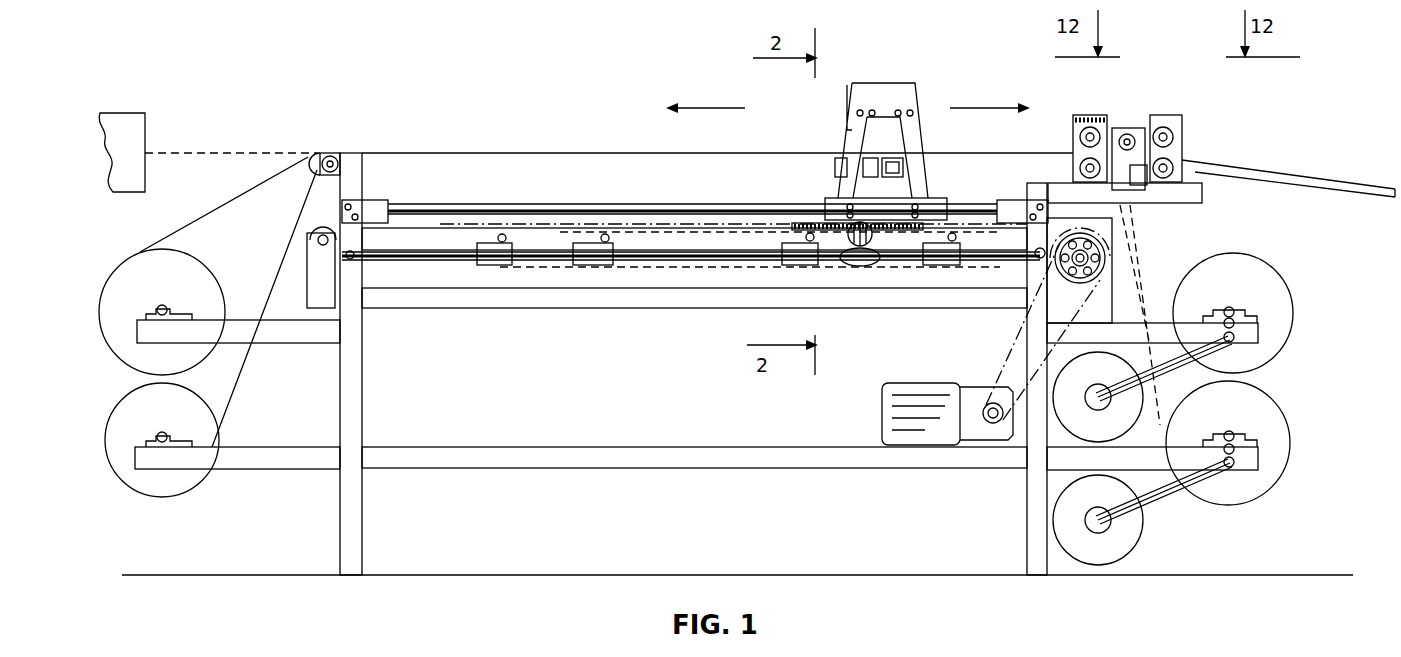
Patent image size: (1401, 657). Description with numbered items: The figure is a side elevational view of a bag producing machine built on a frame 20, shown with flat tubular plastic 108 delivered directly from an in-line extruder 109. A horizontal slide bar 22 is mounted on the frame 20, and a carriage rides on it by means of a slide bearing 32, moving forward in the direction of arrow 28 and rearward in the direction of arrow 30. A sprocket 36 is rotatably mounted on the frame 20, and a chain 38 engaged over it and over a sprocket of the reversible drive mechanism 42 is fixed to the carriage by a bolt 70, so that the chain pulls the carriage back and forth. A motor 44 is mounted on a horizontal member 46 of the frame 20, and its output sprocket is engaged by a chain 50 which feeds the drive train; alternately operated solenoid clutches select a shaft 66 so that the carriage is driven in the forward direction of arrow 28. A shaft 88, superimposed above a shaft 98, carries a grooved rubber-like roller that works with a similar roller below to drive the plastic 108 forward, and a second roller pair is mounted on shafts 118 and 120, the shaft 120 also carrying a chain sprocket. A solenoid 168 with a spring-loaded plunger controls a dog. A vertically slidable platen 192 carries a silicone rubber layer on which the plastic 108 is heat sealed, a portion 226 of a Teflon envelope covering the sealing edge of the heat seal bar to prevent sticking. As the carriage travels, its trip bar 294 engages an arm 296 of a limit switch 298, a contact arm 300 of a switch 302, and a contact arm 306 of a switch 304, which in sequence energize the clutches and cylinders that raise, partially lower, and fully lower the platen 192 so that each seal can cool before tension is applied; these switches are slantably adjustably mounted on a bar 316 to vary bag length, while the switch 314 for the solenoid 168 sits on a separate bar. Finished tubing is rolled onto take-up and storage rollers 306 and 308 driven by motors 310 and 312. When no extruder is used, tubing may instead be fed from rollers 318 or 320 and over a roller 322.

The frame 20 is at (363, 405).
The slide bar 22 is at (455, 250).
The arrow 28 is at (994, 106).
The arrow 30 is at (711, 106).
The slide bearing 32 is at (829, 204).
The sprocket 36 is at (327, 228).
The chain 38 is at (792, 223).
The reversible drive mechanism 42 is at (1130, 251).
The motor 44 is at (920, 392).
The horizontal member 46 is at (818, 447).
The chain 50 is at (1018, 332).
The shaft 66 is at (1118, 266).
The bolt 70 is at (856, 262).
The shaft 88 is at (1073, 117).
The shaft 98 is at (1074, 153).
The flat tubular plastic 108 is at (250, 152).
The extruder 109 is at (151, 113).
The shaft 118 is at (1186, 133).
The shaft 120 is at (1188, 153).
The solenoid 168 is at (1147, 182).
The platen 192 is at (835, 167).
The portion of envelope 226 is at (900, 155).
The trip bar 294 is at (875, 258).
The arm 296 is at (601, 235).
The limit switch 298 is at (597, 257).
The contact arm 300 is at (806, 236).
The switch 302 is at (800, 258).
The switch 304 is at (936, 256).
The contact arm 306 is at (990, 248).
The take-up and storage roller 308 is at (1260, 445).
The motor 310 is at (1116, 428).
The motor 312 is at (1128, 533).
The switch 314 is at (494, 258).
The bar 316 is at (436, 257).
The roller 318 is at (143, 250).
The roller 320 is at (122, 410).
The roller 322 is at (312, 156).